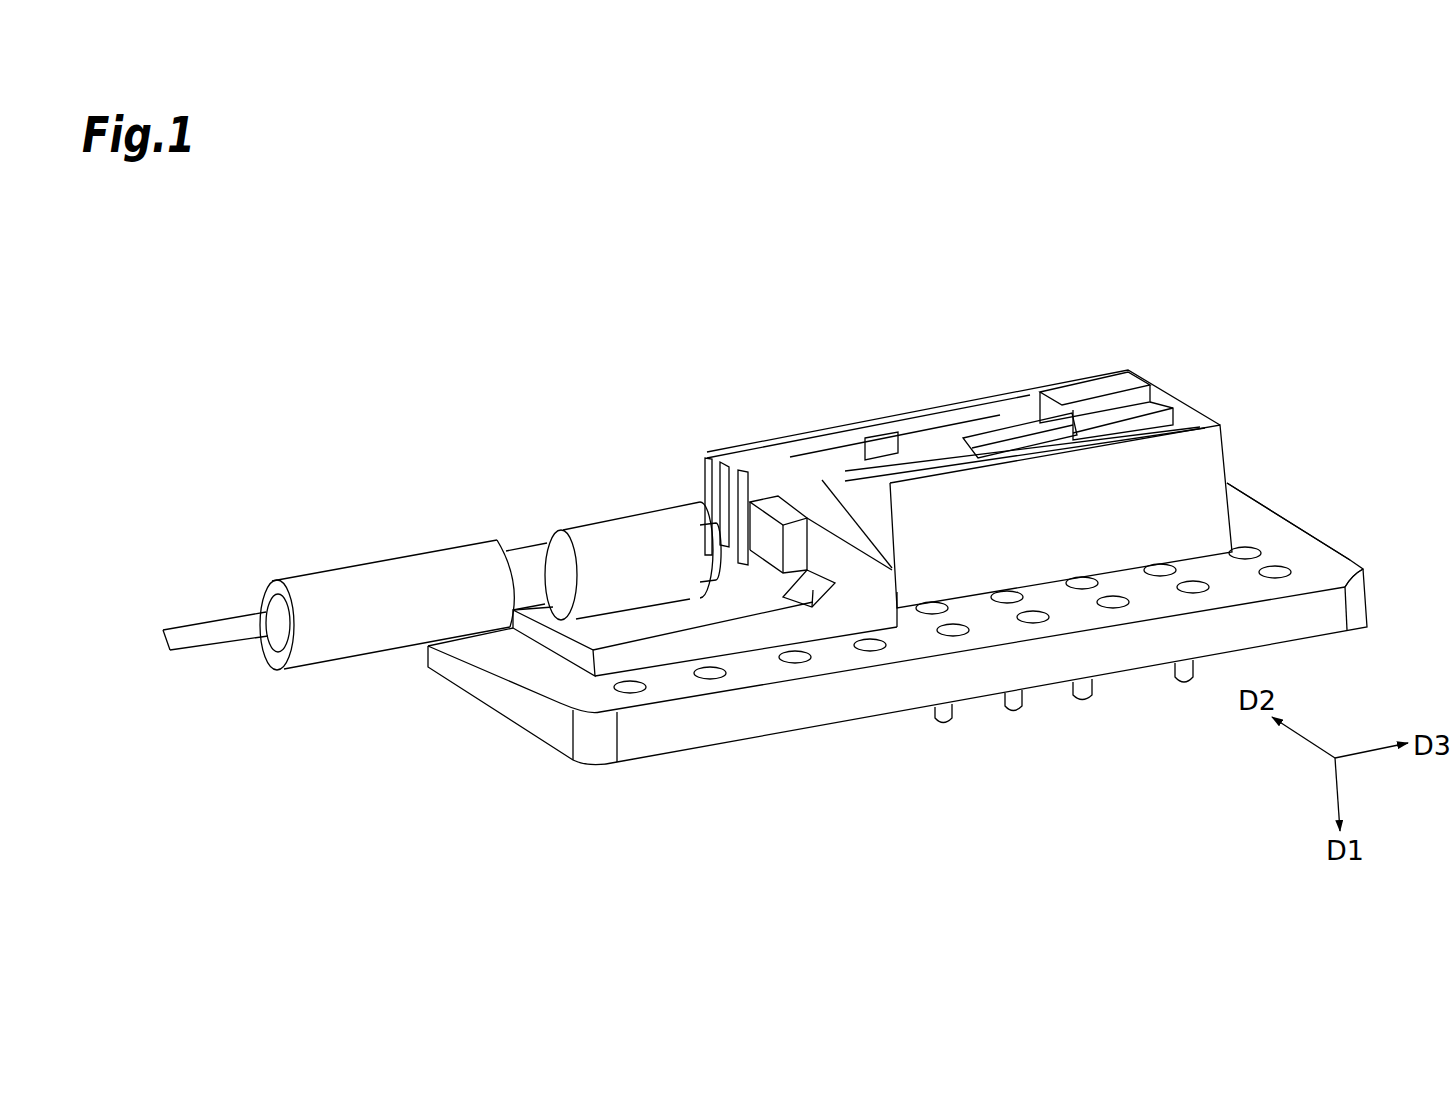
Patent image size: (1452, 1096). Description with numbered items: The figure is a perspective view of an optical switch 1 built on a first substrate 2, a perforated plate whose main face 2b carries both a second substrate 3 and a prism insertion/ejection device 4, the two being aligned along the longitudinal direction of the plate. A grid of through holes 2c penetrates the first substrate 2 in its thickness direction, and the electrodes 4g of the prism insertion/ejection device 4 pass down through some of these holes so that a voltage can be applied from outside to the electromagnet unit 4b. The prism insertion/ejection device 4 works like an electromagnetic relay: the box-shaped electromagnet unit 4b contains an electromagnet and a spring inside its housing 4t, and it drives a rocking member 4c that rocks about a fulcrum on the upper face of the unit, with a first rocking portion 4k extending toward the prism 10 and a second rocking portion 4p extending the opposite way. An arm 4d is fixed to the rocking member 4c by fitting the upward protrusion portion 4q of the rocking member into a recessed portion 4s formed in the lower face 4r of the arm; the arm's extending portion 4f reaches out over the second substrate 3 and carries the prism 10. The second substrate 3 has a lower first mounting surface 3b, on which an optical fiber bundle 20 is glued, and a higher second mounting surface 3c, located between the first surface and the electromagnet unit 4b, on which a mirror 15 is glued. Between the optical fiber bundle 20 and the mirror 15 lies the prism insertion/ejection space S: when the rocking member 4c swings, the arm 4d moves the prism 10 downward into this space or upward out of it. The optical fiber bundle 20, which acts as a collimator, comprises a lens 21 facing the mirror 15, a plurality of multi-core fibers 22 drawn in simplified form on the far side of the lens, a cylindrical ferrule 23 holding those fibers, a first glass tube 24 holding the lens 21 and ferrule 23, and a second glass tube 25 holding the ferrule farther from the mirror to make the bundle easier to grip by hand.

The optical switch 1 is at (1112, 235).
The first substrate 2 is at (1303, 600).
The main face 2b is at (1277, 563).
The through holes 2c is at (1273, 523).
The second substrate 3 is at (683, 650).
The first mounting surface 3b is at (597, 630).
The second mounting surface 3c is at (812, 583).
The prism insertion/ejection device 4 is at (1117, 363).
The electromagnet unit 4b is at (1182, 447).
The rocking member 4c is at (1107, 430).
The arm 4d is at (933, 430).
The extending portion 4f is at (758, 455).
The electrodes 4g is at (1184, 686).
The first rocking portion 4k is at (900, 467).
The second rocking portion 4p is at (1170, 412).
The protrusion portion 4q is at (1013, 427).
The lower face 4r is at (957, 455).
The recessed portion 4s is at (995, 437).
The housing 4t is at (923, 570).
The prism 10 is at (747, 533).
The mirror 15 is at (810, 537).
The optical fiber bundle 20 is at (681, 436).
The lens 21 is at (715, 545).
The multi-core fibers 22 is at (218, 630).
The ferrule 23 is at (527, 553).
The first glass tube 24 is at (600, 548).
The second glass tube 25 is at (420, 575).
The prism insertion/ejection space S is at (750, 598).